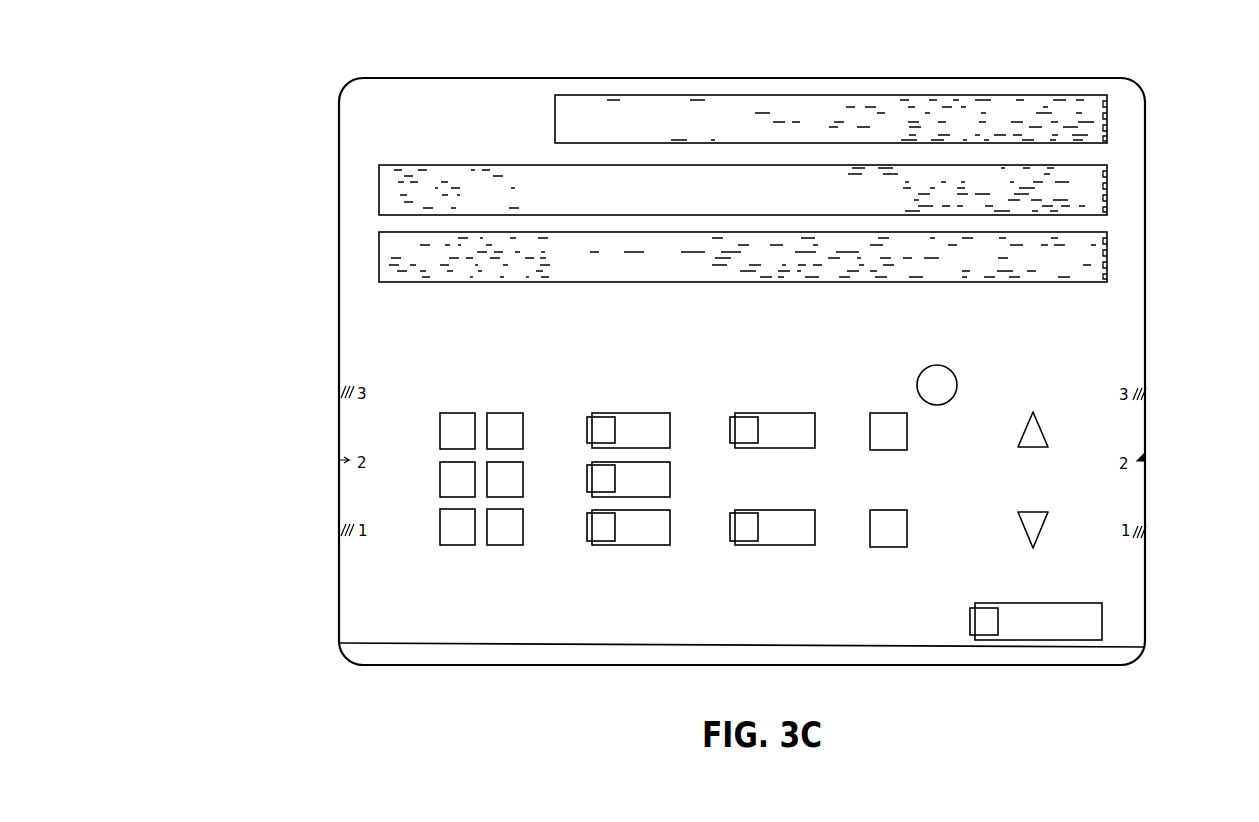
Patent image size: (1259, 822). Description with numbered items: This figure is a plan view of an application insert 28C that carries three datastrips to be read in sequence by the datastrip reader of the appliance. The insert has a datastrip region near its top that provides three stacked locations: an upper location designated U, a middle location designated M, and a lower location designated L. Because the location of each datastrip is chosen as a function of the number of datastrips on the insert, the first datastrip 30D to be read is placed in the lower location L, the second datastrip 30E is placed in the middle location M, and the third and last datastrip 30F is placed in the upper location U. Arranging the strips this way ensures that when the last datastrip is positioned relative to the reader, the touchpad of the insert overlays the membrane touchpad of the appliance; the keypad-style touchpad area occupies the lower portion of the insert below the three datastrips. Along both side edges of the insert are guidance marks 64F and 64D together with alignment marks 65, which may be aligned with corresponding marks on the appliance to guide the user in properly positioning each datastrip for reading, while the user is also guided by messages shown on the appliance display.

The application insert 28C is at (1128, 618).
The third datastrip 30F is at (883, 89).
The second datastrip 30E is at (796, 162).
The first datastrip 30D is at (794, 282).
The upper location U is at (1118, 122).
The middle location M is at (1118, 177).
The lower location L is at (1118, 257).
The guidance mark 64F is at (340, 391).
The alignment mark 65 is at (346, 460).
The guidance mark 64D is at (340, 528).